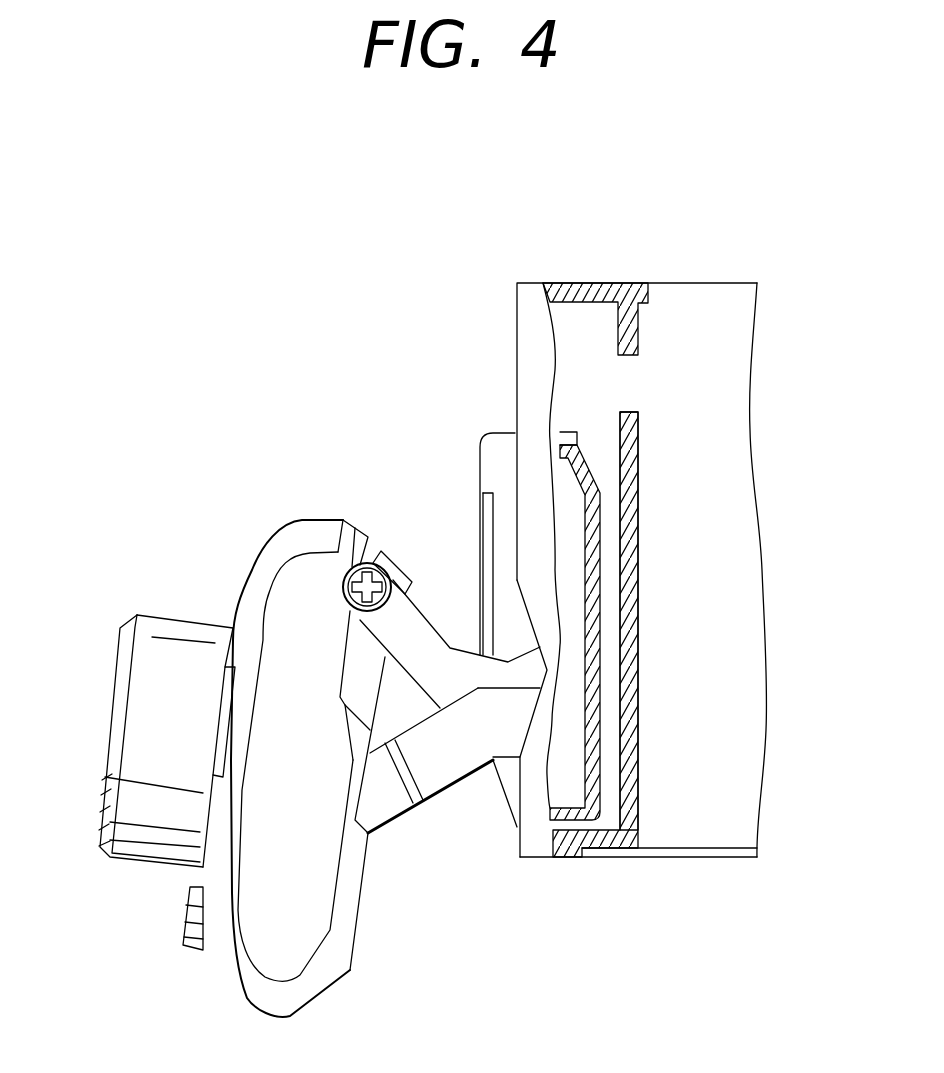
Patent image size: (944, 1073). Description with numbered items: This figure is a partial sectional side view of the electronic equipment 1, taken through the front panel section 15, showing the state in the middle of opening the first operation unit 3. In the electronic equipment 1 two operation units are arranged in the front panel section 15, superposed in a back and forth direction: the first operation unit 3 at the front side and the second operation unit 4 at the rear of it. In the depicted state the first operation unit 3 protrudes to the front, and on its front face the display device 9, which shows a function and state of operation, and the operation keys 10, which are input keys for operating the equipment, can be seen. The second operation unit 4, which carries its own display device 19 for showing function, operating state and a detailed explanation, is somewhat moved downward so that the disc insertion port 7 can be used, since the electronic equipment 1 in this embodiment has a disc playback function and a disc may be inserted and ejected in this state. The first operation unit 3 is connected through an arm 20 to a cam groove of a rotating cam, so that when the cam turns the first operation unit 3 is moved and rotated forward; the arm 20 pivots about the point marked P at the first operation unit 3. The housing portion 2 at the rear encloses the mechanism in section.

The electronic equipment 1 is at (703, 218).
The housing 2 is at (731, 277).
The first operation unit 3 is at (313, 515).
The second operation unit 4 is at (486, 428).
The disc insertion port 7 is at (623, 392).
The display device 9 is at (226, 697).
The operation key 10 is at (112, 786).
The front panel section 15 is at (640, 578).
The display device 19 is at (484, 508).
The arm 20 is at (432, 690).
The pivot screw P is at (400, 557).